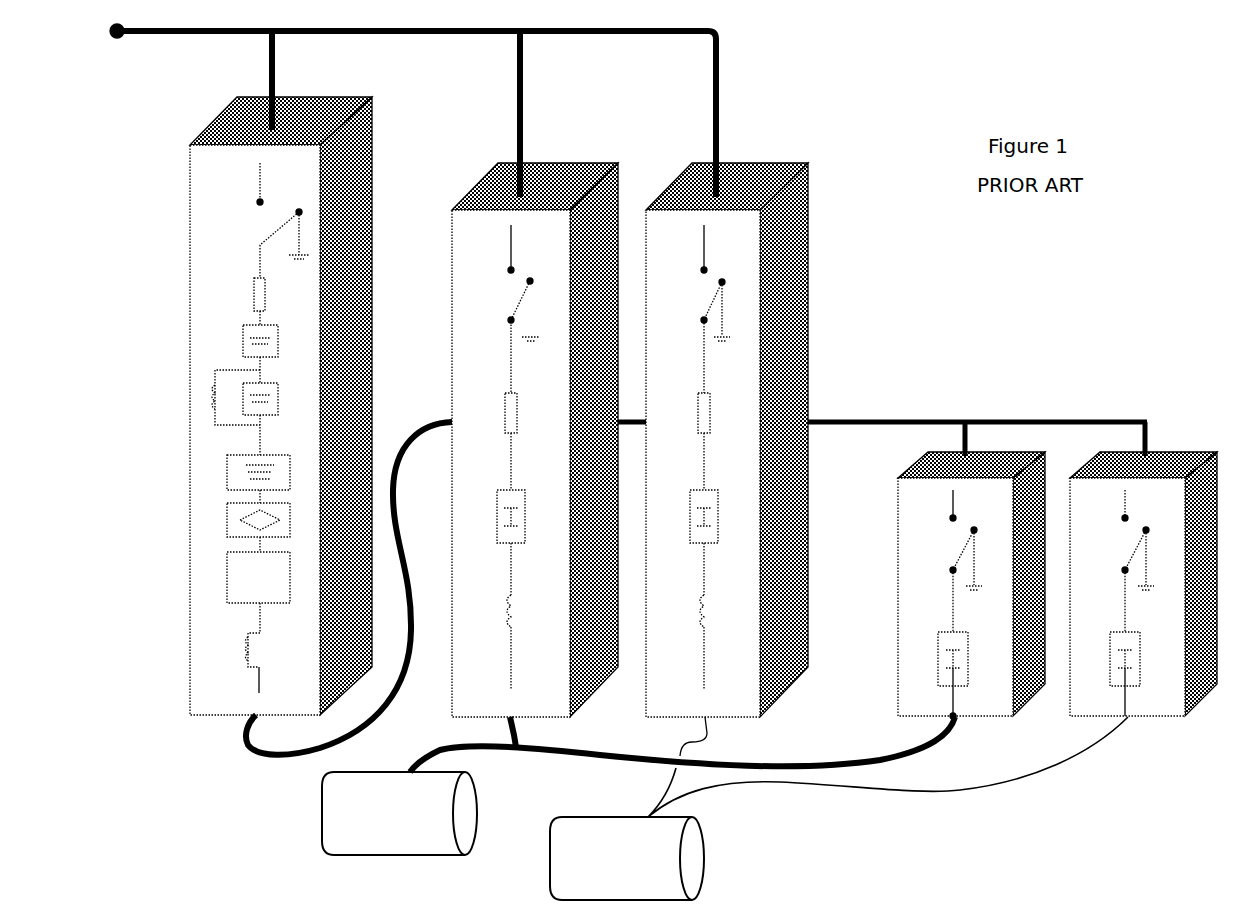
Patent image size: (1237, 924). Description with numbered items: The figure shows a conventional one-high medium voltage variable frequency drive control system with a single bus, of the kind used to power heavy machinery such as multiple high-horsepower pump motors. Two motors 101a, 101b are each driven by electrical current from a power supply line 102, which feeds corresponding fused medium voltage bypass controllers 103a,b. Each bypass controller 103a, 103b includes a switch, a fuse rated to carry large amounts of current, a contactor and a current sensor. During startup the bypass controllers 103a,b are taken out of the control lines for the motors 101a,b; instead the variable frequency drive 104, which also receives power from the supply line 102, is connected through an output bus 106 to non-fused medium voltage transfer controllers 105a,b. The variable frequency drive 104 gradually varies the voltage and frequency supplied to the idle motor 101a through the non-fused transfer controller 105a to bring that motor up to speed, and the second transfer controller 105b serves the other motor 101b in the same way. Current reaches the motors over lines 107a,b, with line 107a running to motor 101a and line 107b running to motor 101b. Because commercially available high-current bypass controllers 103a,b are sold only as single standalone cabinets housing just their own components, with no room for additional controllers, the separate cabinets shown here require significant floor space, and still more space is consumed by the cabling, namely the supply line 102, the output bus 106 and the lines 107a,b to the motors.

The power supply line 102 is at (205, 35).
The fused medium voltage bypass controllers 103a,b is at (630, 403).
The fused medium voltage bypass controller 103a is at (535, 455).
The fused medium voltage bypass controller 103b is at (688, 181).
The variable frequency drive 104 is at (215, 697).
The output bus 106 is at (835, 420).
The non-fused medium voltage transfer controllers 105a,b is at (1057, 505).
The non-fused medium voltage transfer controller 105a is at (971, 585).
The non-fused medium voltage transfer controller 105b is at (1177, 465).
The lines to the motors 107a,b is at (769, 801).
The line to the motor 107a is at (682, 744).
The line to the motor 107b is at (948, 787).
The motor 101a is at (399, 813).
The motor 101b is at (627, 858).